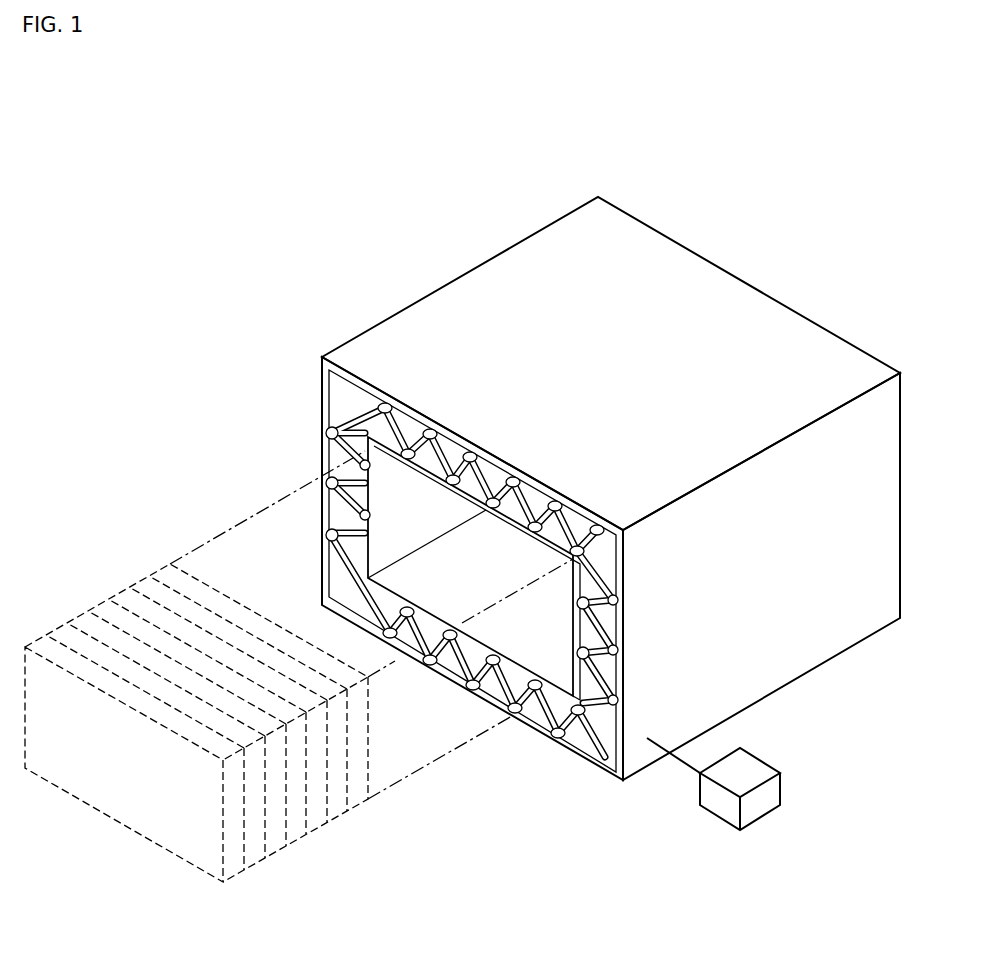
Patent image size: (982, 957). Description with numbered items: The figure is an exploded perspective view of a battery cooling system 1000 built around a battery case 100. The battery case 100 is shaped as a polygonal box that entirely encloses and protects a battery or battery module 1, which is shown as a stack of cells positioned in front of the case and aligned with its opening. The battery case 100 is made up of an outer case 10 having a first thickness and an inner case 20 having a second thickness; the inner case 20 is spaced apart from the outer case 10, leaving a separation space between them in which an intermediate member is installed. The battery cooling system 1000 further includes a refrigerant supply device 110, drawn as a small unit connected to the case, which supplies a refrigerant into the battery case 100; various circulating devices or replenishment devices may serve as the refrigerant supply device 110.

The battery cooling system 1000 is at (213, 139).
The battery case 100 is at (283, 221).
The outer case 10 is at (425, 330).
The inner case 20 is at (390, 486).
The battery module 1 is at (115, 592).
The refrigerant supply device 110 is at (757, 810).